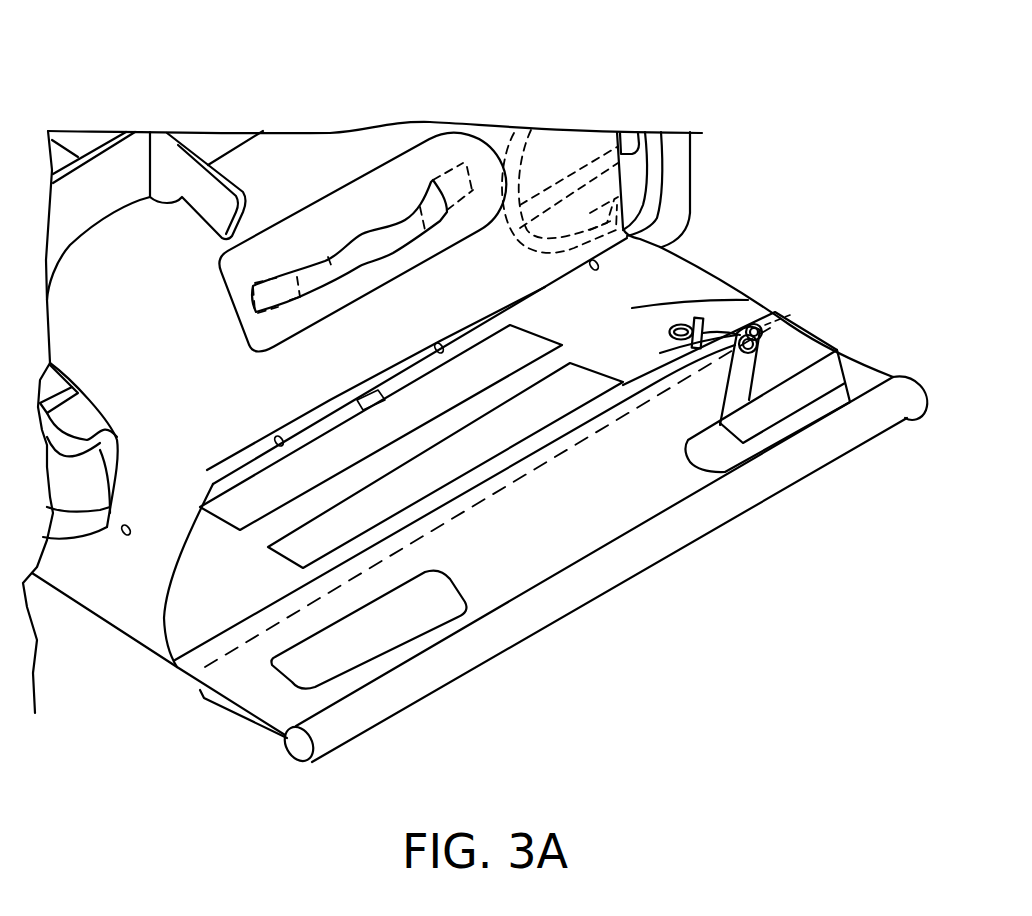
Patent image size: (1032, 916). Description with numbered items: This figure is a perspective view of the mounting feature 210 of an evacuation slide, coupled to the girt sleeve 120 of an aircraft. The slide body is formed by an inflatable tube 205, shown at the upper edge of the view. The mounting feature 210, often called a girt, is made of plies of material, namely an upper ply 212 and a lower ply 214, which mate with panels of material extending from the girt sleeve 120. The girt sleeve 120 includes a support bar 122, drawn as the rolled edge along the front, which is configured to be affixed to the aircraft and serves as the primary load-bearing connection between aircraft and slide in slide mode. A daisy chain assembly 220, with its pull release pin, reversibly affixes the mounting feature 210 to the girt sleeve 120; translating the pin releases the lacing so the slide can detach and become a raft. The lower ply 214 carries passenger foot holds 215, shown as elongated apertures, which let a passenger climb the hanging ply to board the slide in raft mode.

The girt sleeve 120 is at (585, 521).
The support bar 122 is at (300, 748).
The inflatable tube 205 is at (88, 137).
The mounting feature 210 is at (729, 224).
The upper ply 212 is at (165, 480).
The lower ply 214 is at (633, 338).
The passenger foot holds 215 is at (433, 400).
The daisy chain assembly 220 is at (820, 378).